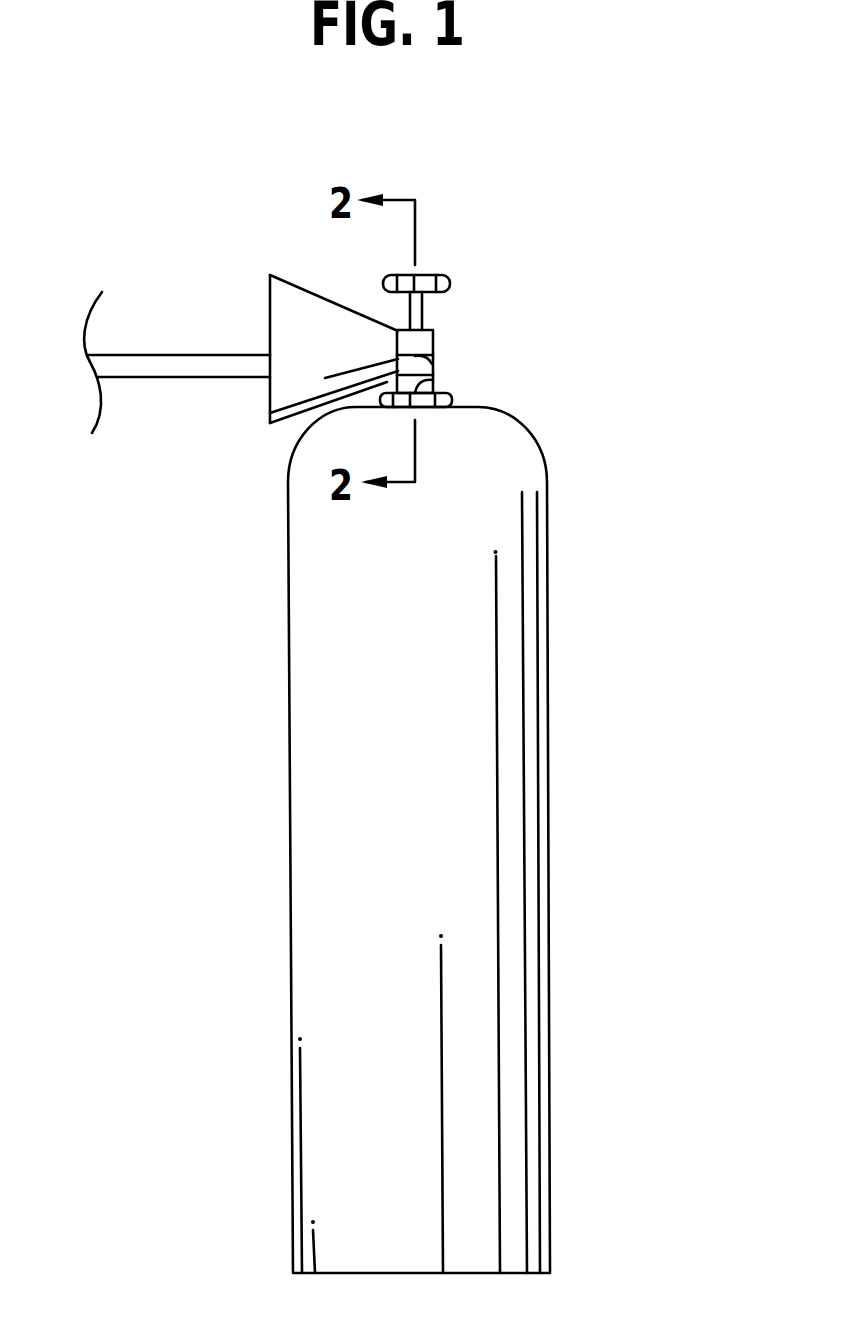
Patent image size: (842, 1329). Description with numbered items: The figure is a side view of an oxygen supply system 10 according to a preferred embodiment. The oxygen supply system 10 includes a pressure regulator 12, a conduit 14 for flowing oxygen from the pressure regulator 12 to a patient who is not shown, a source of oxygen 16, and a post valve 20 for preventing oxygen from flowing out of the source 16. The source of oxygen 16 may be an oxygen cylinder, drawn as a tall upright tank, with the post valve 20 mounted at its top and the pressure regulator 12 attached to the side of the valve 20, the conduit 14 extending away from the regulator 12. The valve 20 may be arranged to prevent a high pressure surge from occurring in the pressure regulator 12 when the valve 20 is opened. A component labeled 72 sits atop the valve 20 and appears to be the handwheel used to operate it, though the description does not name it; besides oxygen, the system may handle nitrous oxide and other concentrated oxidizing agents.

The oxygen supply system 10 is at (652, 402).
The pressure regulator 12 is at (310, 316).
The conduit 14 is at (185, 378).
The source of oxygen 16 is at (465, 703).
The post valve 20 is at (433, 375).
The handwheel 72 is at (423, 310).